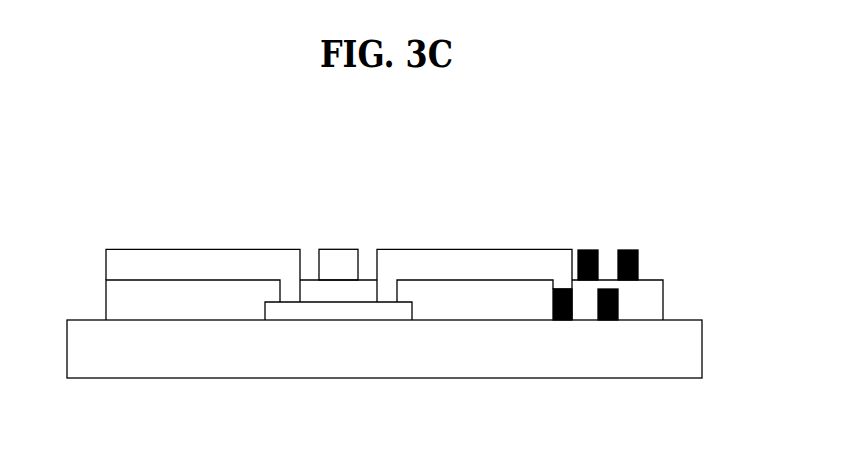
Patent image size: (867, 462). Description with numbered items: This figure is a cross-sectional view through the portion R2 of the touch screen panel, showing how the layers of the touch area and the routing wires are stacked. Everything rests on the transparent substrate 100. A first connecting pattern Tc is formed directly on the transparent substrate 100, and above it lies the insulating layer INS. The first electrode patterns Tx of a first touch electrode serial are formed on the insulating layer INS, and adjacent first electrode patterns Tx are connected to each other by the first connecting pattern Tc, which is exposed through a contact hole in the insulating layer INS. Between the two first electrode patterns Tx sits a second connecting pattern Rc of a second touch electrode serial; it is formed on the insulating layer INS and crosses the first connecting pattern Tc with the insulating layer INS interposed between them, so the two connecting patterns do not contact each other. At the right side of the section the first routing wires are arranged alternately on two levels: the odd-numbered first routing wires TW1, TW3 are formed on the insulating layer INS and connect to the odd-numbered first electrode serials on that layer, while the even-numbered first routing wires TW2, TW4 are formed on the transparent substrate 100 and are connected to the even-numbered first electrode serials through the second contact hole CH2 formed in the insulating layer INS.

The portion R2 is at (90, 166).
The transparent substrate 100 is at (405, 372).
The insulating layer INS is at (117, 299).
The first connecting pattern Tc is at (328, 312).
The first electrode pattern Tx is at (161, 255).
The second connecting pattern Rc is at (343, 249).
The second contact hole CH2 is at (572, 289).
The first routing wire TW4 is at (562, 322).
The first routing wire TW2 is at (608, 322).
The first routing wire TW3 is at (590, 250).
The first routing wire TW1 is at (630, 250).